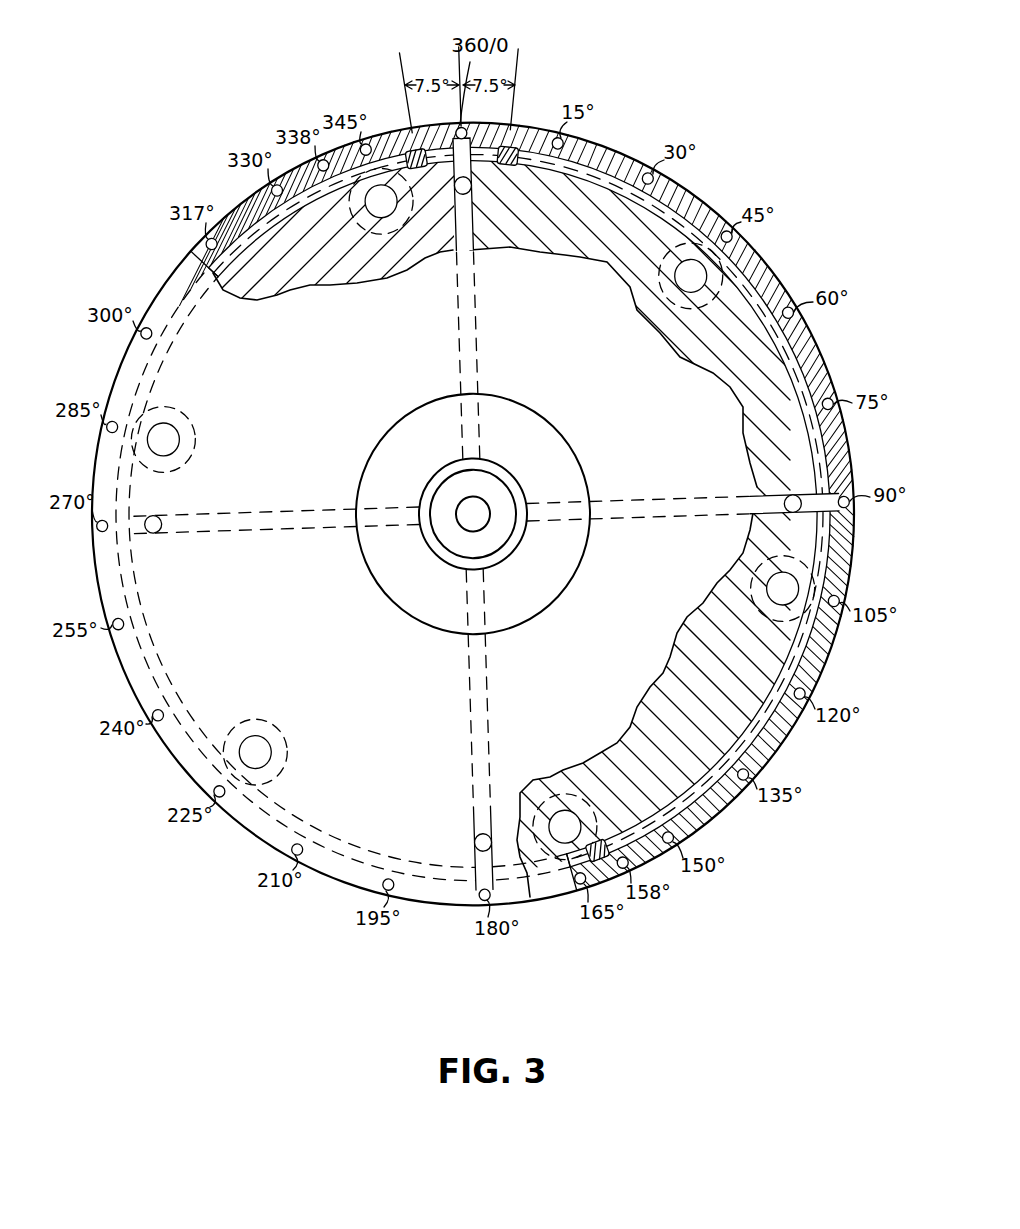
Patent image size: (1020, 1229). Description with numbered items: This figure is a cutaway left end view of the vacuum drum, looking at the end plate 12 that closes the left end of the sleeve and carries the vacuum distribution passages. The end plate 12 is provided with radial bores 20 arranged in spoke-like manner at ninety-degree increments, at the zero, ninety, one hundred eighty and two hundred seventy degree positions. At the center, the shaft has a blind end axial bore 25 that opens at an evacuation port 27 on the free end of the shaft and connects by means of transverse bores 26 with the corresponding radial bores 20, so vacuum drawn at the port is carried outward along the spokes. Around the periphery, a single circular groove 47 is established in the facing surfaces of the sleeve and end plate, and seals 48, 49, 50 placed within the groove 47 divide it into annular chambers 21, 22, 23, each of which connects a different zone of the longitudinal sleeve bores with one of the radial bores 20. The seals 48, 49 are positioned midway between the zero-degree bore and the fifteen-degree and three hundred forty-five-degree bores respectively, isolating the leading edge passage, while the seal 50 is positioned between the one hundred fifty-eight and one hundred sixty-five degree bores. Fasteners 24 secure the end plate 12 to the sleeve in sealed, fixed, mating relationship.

The end plate 12 is at (305, 378).
The radial bores 20 is at (482, 346).
The annular chamber 21 is at (408, 150).
The annular chamber 22 is at (823, 358).
The annular chamber 23 is at (138, 672).
The fasteners 24 is at (178, 437).
The blind end axial bore 25 is at (460, 535).
The transverse bores 26 is at (497, 466).
The evacuation port 27 is at (487, 510).
The circular groove 47 is at (833, 652).
The seal 48 is at (512, 150).
The seal 49 is at (421, 172).
The seal 50 is at (602, 866).